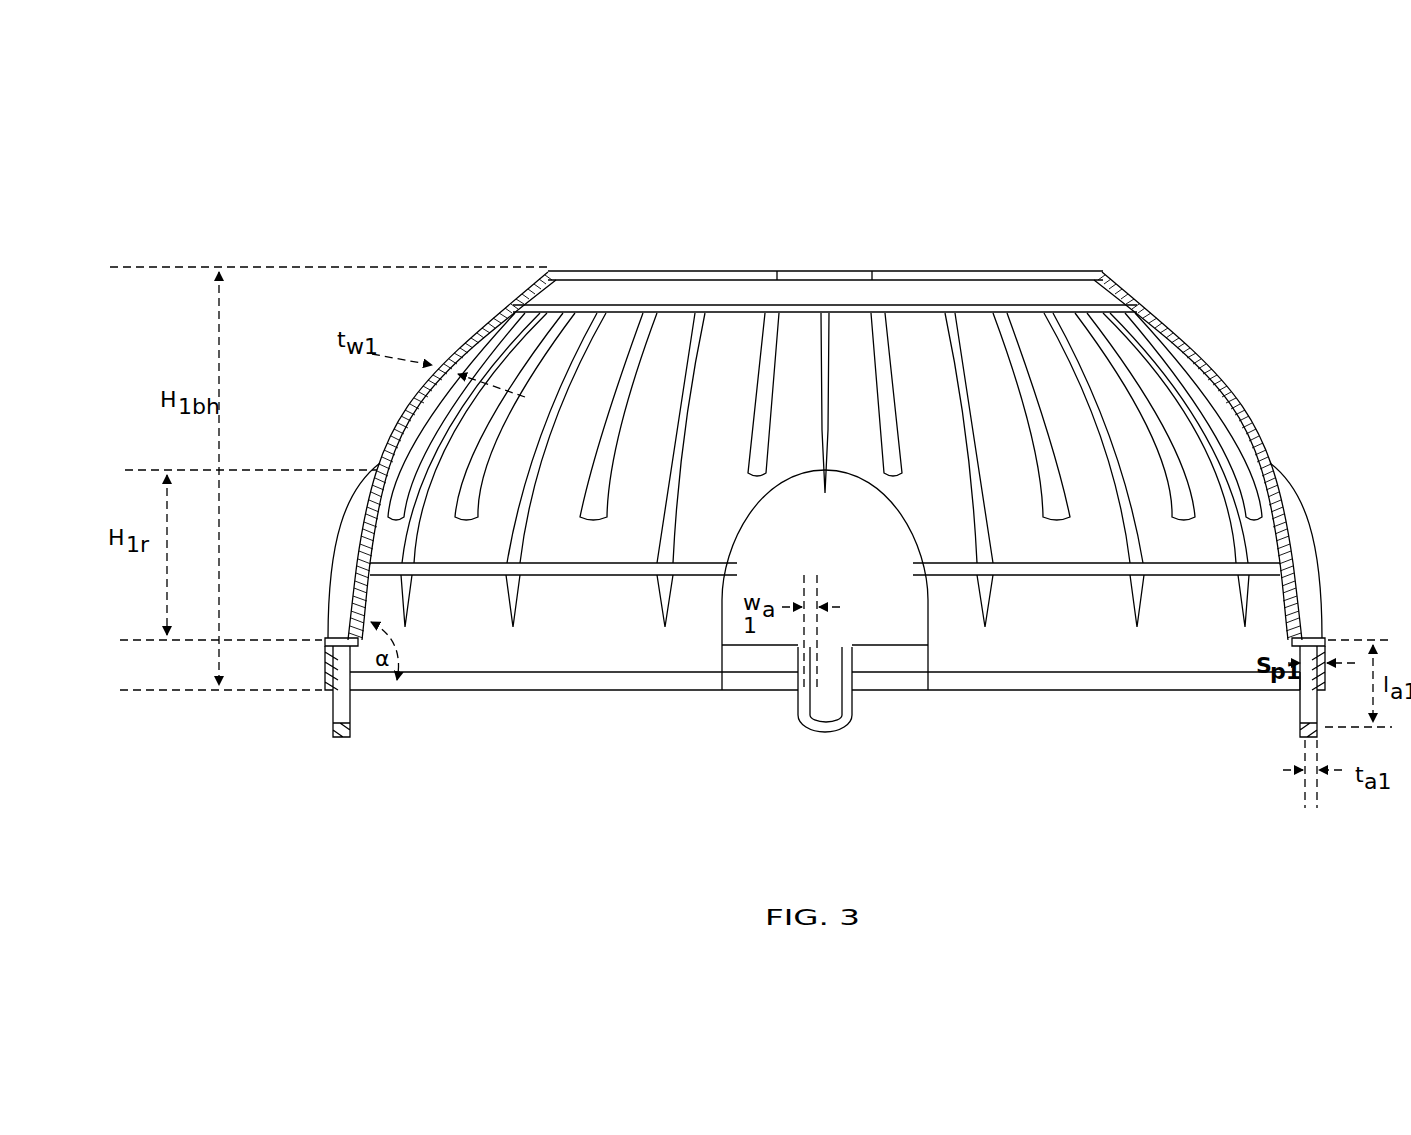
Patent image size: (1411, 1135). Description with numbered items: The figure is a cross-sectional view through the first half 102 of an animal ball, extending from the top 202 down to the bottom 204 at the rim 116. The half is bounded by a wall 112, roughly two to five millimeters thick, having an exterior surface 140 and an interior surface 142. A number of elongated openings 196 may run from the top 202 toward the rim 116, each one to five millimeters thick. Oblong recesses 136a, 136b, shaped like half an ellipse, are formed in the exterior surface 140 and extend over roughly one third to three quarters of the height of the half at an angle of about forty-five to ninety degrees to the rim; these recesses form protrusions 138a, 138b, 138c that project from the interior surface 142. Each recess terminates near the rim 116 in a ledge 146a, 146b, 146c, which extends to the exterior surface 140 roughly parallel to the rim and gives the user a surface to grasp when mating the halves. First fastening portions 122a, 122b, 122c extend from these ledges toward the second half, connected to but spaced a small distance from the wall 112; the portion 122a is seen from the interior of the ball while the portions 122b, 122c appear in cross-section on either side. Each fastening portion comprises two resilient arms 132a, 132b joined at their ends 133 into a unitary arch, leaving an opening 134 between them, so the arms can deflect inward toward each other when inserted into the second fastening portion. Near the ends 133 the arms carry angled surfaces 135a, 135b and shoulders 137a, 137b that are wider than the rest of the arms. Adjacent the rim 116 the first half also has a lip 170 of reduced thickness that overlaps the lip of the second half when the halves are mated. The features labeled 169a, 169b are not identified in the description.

The first half of the ball 102 is at (1190, 152).
The top of the first half 202 is at (893, 225).
The bottom of the first half 204 is at (505, 800).
The wall 112 is at (1172, 330).
The exterior surface 140 is at (1245, 410).
The elongated opening 196 is at (1020, 362).
The rim 116 is at (570, 690).
The first fastening portion 122a is at (793, 720).
The first fastening portion 122b is at (333, 725).
The first fastening portion 122c is at (1302, 725).
The resilient arm 132a is at (807, 659).
The resilient arm 132b is at (850, 664).
The ends 133 is at (822, 732).
The opening 134 is at (833, 712).
The angled surface 135a is at (793, 700).
The angled surface 135b is at (833, 712).
The recess 136a is at (353, 537).
The recess 136b is at (1295, 545).
The shoulder 137a is at (780, 677).
The shoulder 137b is at (860, 678).
The protrusion 138a is at (370, 594).
The protrusion 138b is at (862, 537).
The protrusion 138c is at (1283, 577).
The interior surface 142 is at (1150, 657).
The ledge 146a is at (347, 638).
The ledge 146b is at (880, 648).
The ledge 146c is at (1308, 633).
The left slot lip 169a is at (808, 643).
The right slot lip 169b is at (843, 648).
The lip 170 is at (1253, 684).